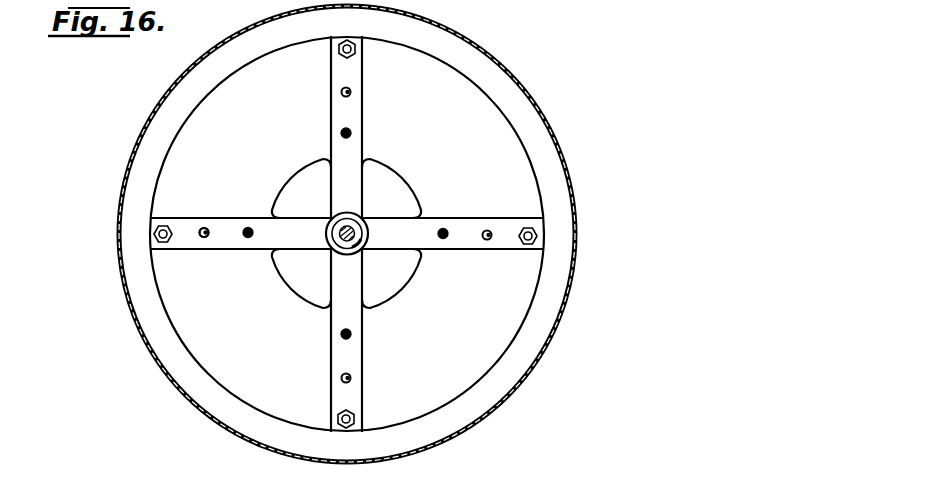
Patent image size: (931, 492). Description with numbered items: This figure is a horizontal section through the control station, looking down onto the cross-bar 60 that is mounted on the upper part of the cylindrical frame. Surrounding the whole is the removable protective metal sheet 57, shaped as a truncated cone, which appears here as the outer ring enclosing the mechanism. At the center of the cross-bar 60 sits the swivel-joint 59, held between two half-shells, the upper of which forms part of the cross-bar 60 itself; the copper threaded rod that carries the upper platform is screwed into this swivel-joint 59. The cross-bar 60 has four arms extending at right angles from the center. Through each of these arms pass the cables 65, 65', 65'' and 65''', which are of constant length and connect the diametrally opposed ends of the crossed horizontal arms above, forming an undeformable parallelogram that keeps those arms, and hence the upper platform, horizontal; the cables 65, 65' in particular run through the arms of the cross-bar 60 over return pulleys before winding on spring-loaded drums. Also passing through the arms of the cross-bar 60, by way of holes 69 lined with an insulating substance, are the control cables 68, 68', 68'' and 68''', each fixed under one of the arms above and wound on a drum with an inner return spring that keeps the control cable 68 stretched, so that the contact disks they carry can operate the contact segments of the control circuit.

The removable protective metal sheet 57 is at (525, 86).
The swivel-joint 59 is at (353, 243).
The cross-bar 60 is at (467, 230).
The cable 65 is at (249, 256).
The cable 65' is at (451, 257).
The cable 65'' is at (370, 340).
The cable 65''' is at (372, 134).
The control cable 68 is at (219, 213).
The control cable 68' is at (501, 257).
The control cable 68'' is at (321, 373).
The control cable 68''' is at (373, 94).
The holes 69 is at (203, 237).